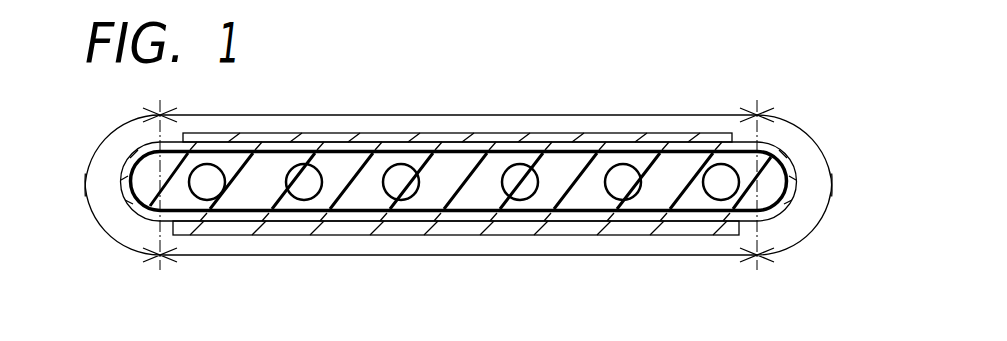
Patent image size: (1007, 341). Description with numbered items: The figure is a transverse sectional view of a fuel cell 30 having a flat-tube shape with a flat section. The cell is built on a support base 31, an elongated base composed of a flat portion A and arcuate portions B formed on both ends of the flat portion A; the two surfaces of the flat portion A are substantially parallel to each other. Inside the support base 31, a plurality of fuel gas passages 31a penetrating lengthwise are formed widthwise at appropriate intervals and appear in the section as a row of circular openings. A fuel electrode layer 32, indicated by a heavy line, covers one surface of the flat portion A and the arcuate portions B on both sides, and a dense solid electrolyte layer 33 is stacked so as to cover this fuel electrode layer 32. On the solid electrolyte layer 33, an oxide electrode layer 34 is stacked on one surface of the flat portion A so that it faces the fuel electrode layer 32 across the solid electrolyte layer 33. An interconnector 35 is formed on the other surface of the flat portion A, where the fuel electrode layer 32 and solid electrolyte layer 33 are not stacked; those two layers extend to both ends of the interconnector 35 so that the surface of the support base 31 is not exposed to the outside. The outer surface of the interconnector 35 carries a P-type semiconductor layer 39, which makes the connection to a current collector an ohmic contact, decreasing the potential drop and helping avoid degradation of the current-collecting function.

The fuel cell 30 is at (793, 90).
The support base 31 is at (780, 178).
The fuel gas passages 31a is at (396, 167).
The fuel electrode layer 32 is at (577, 213).
The solid electrolyte layer 33 is at (123, 180).
The oxide electrode layer 34 is at (443, 228).
The interconnector 35 is at (402, 147).
The P-type semiconductor layer 39 is at (527, 138).
The flat portion A is at (452, 152).
The arcuate portions B is at (128, 205).